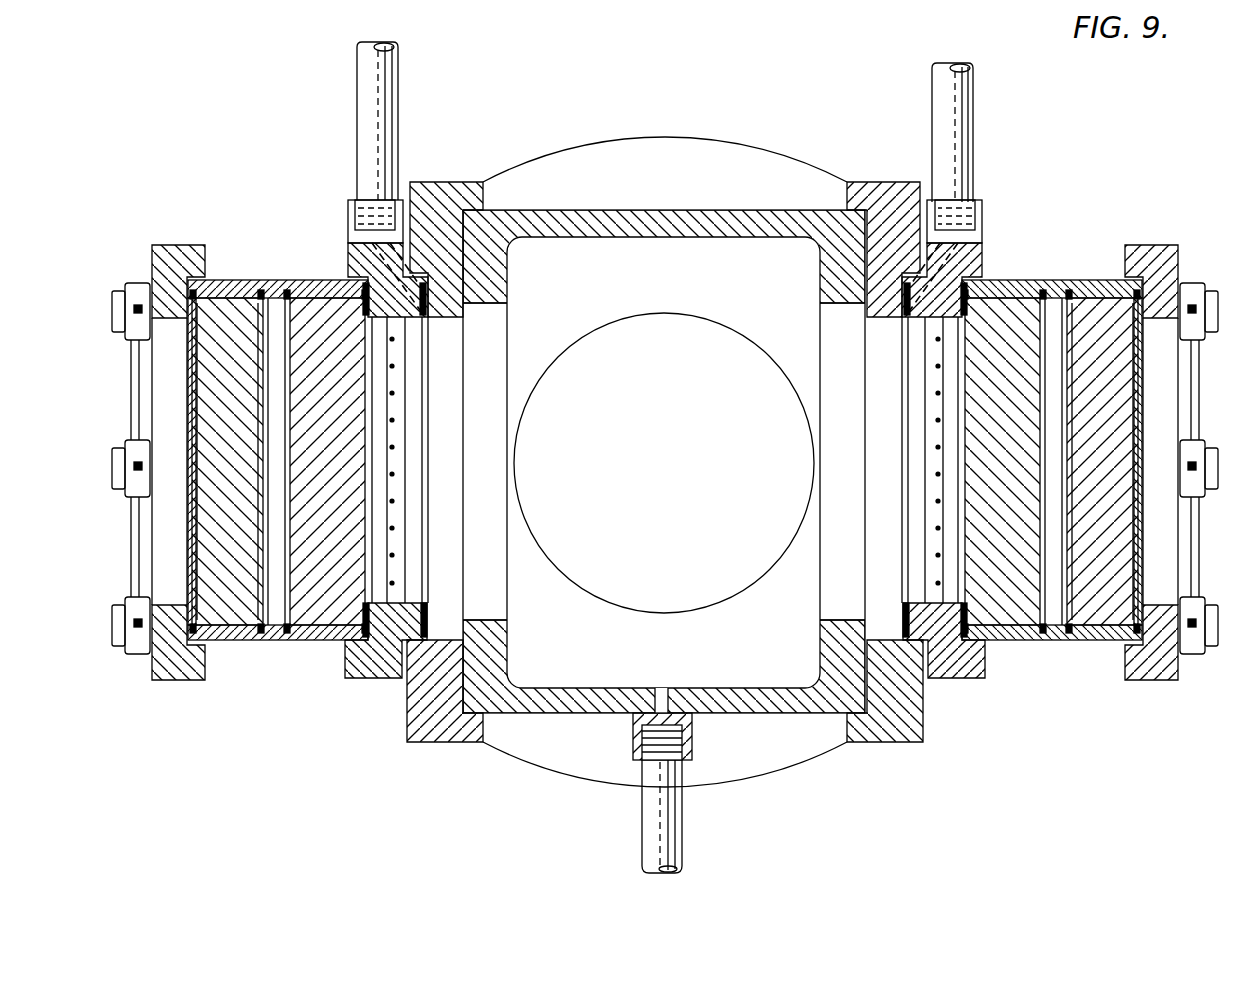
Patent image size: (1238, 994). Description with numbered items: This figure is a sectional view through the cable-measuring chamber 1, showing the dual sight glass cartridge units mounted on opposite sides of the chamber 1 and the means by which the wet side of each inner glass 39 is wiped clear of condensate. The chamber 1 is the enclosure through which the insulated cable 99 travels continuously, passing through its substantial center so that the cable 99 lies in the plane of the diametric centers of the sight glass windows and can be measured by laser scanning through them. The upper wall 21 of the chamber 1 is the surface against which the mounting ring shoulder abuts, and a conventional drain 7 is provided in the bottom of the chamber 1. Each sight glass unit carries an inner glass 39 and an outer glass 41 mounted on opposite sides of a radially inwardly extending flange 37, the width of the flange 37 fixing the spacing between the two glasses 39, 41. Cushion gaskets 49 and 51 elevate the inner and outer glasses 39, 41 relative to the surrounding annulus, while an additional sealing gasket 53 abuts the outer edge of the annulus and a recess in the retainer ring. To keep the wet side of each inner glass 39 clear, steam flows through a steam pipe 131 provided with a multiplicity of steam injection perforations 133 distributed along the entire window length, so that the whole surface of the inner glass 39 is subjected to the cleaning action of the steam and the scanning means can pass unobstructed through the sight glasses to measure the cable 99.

The chamber 1 is at (673, 157).
The drain 7 is at (672, 828).
The upper wall 21 is at (693, 212).
The flange 37 is at (280, 302).
The inner glass 39 is at (305, 615).
The outer glass 41 is at (252, 612).
The cushion gasket 49 is at (250, 318).
The cushion gasket 51 is at (296, 318).
The sealing gasket 53 is at (192, 628).
The cable 99 is at (667, 462).
The steam pipe 131 is at (395, 305).
The steam injection perforations 133 is at (394, 555).